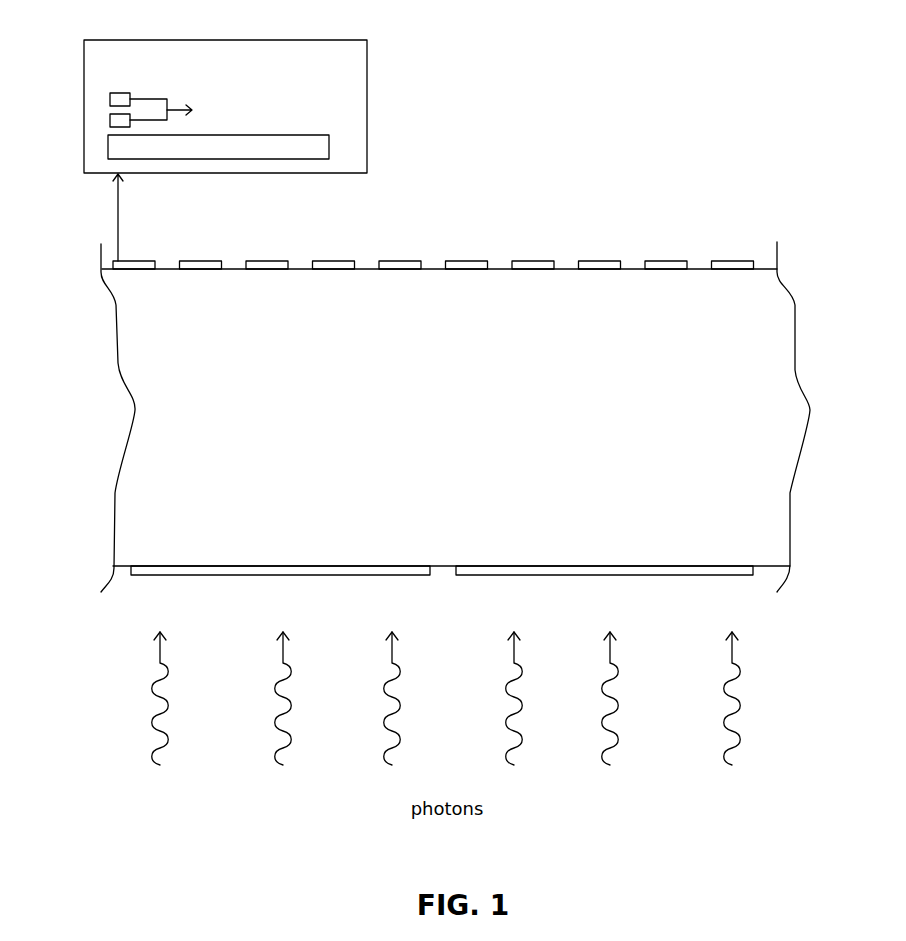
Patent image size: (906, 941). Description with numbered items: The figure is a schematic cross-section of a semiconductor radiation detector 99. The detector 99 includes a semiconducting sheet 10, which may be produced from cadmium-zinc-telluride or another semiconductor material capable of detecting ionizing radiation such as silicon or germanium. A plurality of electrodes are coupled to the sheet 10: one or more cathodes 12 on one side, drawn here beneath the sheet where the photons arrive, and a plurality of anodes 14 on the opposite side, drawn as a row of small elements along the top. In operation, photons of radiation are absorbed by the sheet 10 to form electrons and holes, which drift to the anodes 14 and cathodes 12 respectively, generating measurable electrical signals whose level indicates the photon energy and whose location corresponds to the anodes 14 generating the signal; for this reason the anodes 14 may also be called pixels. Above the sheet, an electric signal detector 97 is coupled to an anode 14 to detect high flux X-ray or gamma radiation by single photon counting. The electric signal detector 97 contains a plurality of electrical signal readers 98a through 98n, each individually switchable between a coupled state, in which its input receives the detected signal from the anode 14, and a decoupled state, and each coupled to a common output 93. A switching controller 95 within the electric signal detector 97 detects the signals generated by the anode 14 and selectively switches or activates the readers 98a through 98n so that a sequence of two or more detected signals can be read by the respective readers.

The semiconducting sheet 10 is at (147, 303).
The cathodes 12 is at (181, 580).
The anodes 14 is at (133, 260).
The common output 93 is at (172, 107).
The switching controller 95 is at (329, 135).
The electric signal detector 97 is at (367, 112).
The electrical signal reader 98a is at (108, 94).
The electrical signal reader 98n is at (108, 118).
The semiconductor radiation detector 99 is at (747, 78).